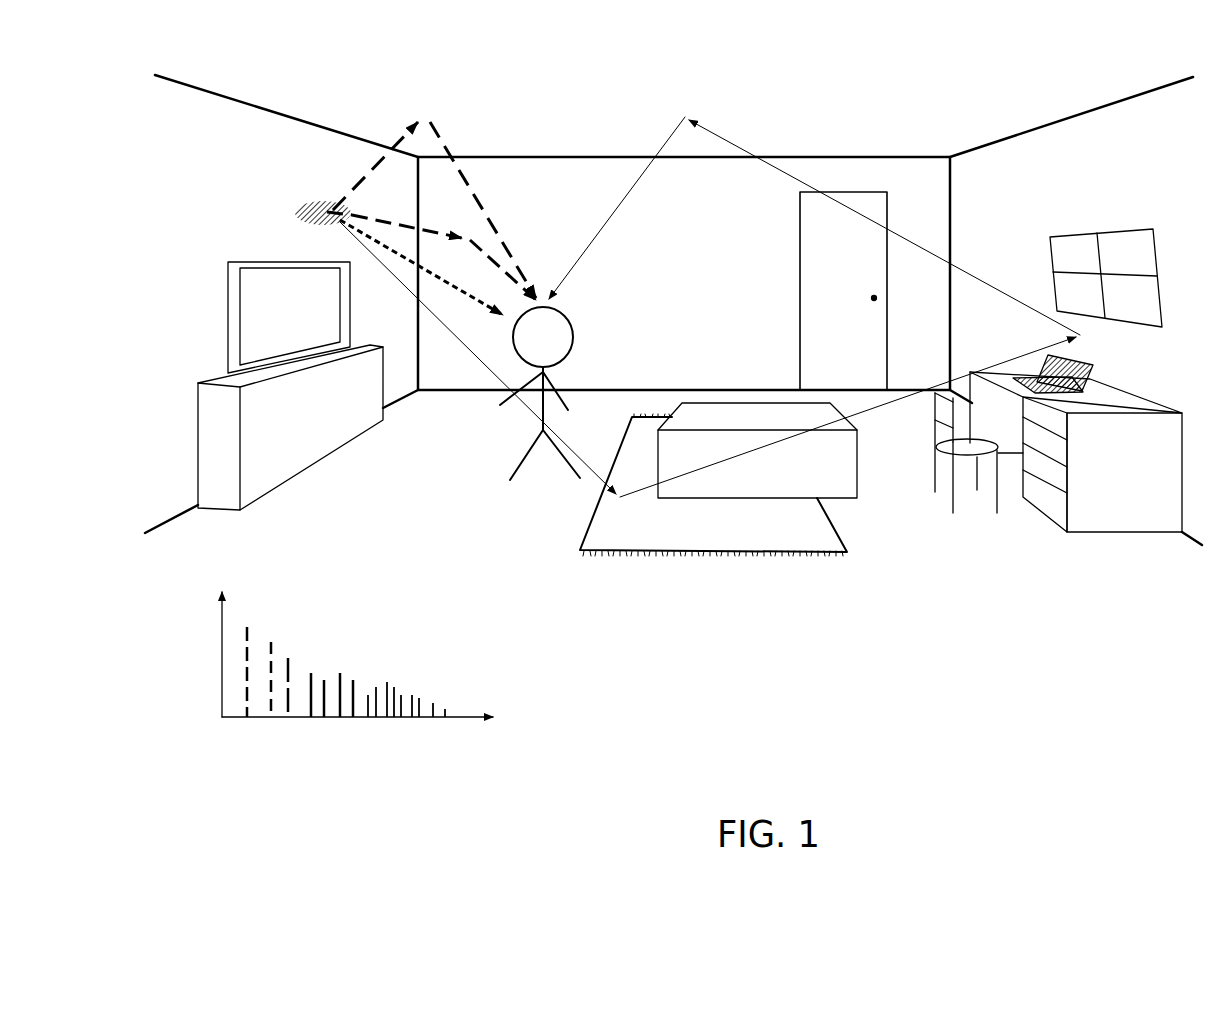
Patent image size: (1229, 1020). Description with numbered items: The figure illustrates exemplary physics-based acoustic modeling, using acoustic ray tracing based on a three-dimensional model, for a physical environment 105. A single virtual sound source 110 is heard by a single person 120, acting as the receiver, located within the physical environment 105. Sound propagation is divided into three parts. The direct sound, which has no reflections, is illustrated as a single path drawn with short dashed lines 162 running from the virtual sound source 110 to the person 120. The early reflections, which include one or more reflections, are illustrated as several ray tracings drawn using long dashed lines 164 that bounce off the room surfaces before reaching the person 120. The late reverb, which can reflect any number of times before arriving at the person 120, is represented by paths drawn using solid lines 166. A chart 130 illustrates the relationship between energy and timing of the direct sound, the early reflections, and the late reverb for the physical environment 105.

The physical environment 105 is at (1133, 154).
The virtual sound source 110 is at (301, 203).
The person 120 is at (574, 330).
The chart 130 is at (205, 713).
The short dashed lines 162 is at (448, 284).
The long dashed lines 164 is at (371, 242).
The solid lines 166 is at (618, 203).